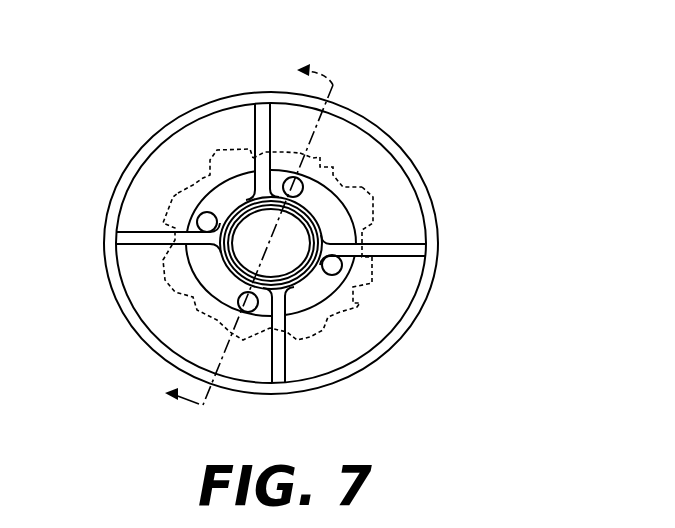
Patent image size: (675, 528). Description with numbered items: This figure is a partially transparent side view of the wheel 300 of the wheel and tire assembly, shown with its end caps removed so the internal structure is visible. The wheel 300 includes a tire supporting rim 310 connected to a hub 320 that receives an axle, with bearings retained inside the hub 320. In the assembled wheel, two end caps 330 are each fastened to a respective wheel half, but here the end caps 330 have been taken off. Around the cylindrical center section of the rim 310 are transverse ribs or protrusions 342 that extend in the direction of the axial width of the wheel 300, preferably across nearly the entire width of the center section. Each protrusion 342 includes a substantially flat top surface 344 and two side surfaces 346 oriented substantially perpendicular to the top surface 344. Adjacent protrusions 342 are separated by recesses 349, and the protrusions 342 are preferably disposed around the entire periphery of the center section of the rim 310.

The wheel 300 is at (434, 117).
The tire supporting rim 310 is at (187, 110).
The hub 320 is at (200, 278).
The end cap 330 is at (437, 217).
The transverse ribs or protrusions 342 is at (228, 157).
The top surface 344 is at (215, 155).
The side surfaces 346 is at (207, 177).
The recesses 349 is at (338, 178).